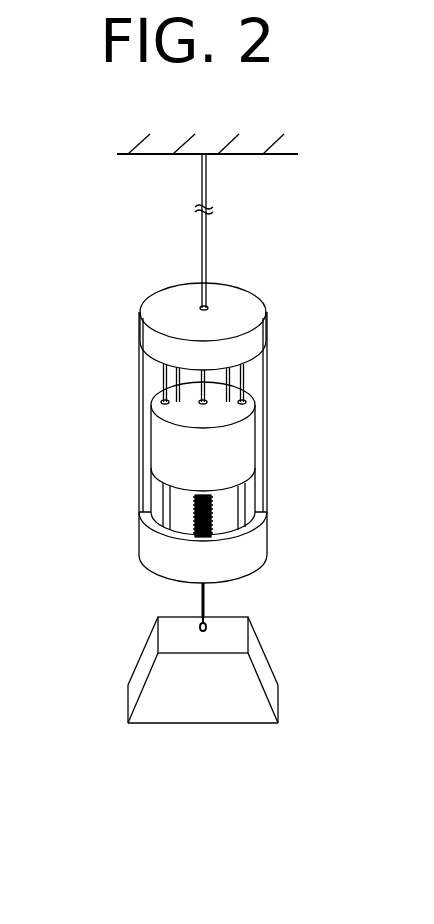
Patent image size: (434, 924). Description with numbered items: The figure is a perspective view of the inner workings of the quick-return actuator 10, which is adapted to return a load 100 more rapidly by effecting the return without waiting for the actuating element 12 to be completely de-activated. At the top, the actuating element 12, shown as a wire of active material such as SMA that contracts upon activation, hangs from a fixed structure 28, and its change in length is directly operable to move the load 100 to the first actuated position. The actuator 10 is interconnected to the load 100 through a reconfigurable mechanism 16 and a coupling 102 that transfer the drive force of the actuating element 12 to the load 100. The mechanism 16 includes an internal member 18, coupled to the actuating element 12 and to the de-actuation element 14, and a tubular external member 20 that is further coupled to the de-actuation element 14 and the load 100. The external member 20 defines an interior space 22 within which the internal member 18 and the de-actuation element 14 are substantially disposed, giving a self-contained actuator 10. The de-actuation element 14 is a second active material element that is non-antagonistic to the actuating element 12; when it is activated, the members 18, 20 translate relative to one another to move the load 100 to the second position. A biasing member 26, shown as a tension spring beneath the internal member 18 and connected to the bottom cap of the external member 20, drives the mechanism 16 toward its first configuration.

The quick-return actuator 10 is at (104, 262).
The actuating element 12 is at (207, 228).
The de-actuation element 14 is at (248, 368).
The reconfigurable mechanism 16 is at (199, 456).
The internal member 18 is at (151, 447).
The external member 20 is at (141, 408).
The interior space 22 is at (147, 367).
The biasing member 26 is at (212, 505).
The fixed structure 28 is at (252, 155).
The load 100 is at (150, 672).
The coupling 102 is at (200, 598).